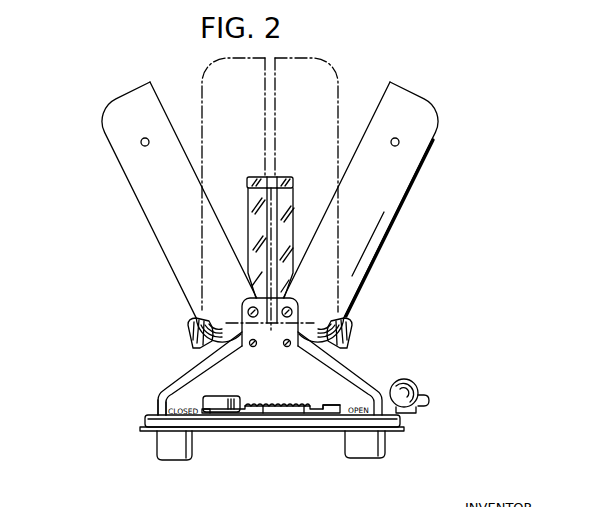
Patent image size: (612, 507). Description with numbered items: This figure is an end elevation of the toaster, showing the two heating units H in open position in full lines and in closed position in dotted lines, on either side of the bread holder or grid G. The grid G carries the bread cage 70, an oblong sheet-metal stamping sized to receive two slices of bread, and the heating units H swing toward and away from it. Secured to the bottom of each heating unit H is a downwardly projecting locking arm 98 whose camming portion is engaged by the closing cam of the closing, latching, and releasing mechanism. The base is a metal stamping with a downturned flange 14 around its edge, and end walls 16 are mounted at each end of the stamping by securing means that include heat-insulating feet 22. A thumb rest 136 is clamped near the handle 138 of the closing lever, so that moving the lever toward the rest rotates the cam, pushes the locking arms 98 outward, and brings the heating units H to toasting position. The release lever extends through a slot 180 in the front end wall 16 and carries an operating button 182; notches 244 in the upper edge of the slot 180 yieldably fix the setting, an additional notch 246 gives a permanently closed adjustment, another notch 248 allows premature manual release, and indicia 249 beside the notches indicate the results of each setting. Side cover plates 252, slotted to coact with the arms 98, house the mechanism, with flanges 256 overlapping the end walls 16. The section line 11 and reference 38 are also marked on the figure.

The arm 38 is at (142, 160).
The bread cage 70 is at (255, 222).
The section line 11 is at (270, 296).
The locking arm 98 is at (195, 338).
The side cover plate 252 is at (351, 351).
The notch 248 is at (328, 408).
The end wall 16 is at (356, 389).
The thumb rest 136 is at (414, 382).
The flange 256 is at (157, 398).
The handle 138 is at (424, 407).
The downturned flange 14 is at (140, 430).
The foot 22 is at (165, 458).
The additional notch 246 is at (210, 413).
The operating button 182 is at (230, 413).
The indicia 249 is at (265, 412).
The notch 244 is at (305, 412).
The slot 180 is at (332, 413).
The grid G is at (294, 171).
The heating unit H is at (141, 212).